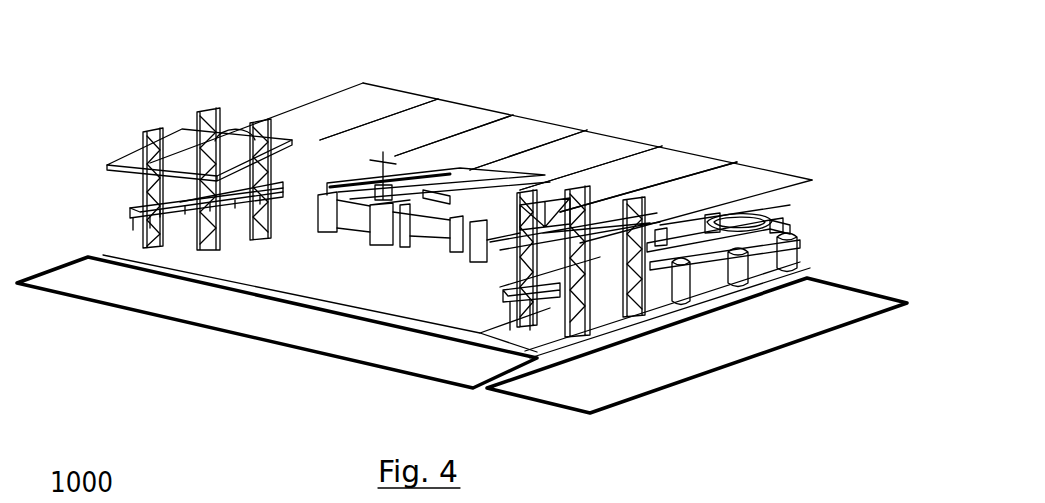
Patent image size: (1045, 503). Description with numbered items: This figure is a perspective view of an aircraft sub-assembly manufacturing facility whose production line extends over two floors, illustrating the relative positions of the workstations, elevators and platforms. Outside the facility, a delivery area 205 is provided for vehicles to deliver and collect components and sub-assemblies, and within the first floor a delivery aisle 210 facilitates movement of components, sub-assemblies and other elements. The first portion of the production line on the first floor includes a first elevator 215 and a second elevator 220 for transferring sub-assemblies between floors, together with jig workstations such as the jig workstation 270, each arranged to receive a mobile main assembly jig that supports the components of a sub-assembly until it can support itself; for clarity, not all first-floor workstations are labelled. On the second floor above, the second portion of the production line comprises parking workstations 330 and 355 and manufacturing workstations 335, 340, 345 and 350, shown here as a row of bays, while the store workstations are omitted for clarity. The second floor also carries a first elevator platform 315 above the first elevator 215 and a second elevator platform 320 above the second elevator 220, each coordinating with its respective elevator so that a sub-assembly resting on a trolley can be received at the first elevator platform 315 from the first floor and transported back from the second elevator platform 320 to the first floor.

The delivery area 205 is at (790, 345).
The delivery aisle 210 is at (248, 345).
The first elevator 215 is at (540, 252).
The second elevator 220 is at (128, 211).
The jig workstation 270 is at (800, 250).
The first elevator platform 315 is at (598, 248).
The second elevator platform 320 is at (210, 112).
The parking workstation 330 is at (776, 170).
The manufacturing workstation 335 is at (702, 150).
The manufacturing workstation 340 is at (628, 133).
The manufacturing workstation 345 is at (548, 118).
The manufacturing workstation 350 is at (470, 105).
The parking workstation 355 is at (403, 82).